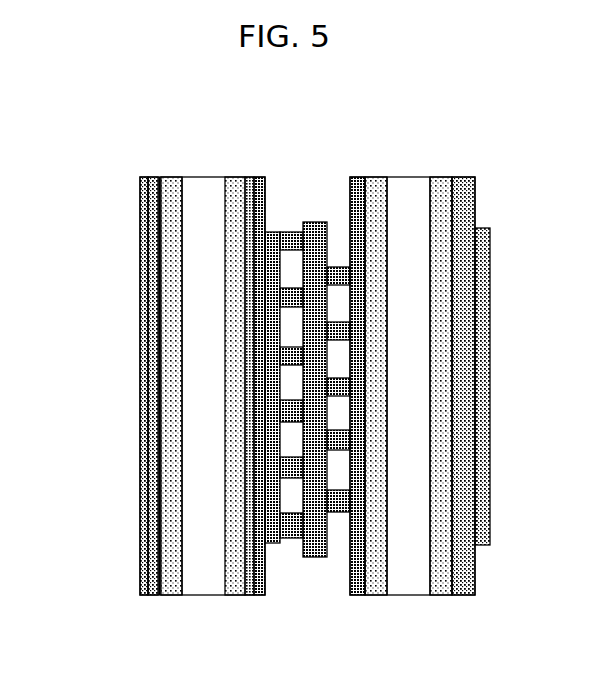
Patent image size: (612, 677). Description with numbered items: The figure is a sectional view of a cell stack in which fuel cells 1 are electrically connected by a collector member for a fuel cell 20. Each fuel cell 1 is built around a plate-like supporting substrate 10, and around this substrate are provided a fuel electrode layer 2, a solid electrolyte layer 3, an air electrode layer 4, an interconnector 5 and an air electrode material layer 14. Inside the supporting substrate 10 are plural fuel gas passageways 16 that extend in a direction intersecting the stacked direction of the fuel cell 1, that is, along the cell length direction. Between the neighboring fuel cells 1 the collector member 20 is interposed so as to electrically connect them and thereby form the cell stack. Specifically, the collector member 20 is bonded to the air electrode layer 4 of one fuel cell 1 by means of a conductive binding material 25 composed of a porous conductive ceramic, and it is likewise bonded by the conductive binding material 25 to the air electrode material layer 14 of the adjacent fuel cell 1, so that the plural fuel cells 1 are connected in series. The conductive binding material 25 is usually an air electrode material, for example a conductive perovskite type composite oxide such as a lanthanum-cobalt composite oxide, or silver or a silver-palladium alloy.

The fuel cell 1 is at (136, 285).
The fuel electrode layer 2 is at (253, 180).
The solid electrolyte layer 3 is at (262, 180).
The air electrode layer 4 is at (278, 232).
The interconnector 5 is at (158, 178).
The plate-like supporting substrate 10 is at (240, 188).
The air electrode material layer 14 is at (135, 196).
The fuel gas passageways 16 is at (183, 178).
The collector member for a fuel cell 20 is at (320, 222).
The conductive binding material 25 is at (138, 205).